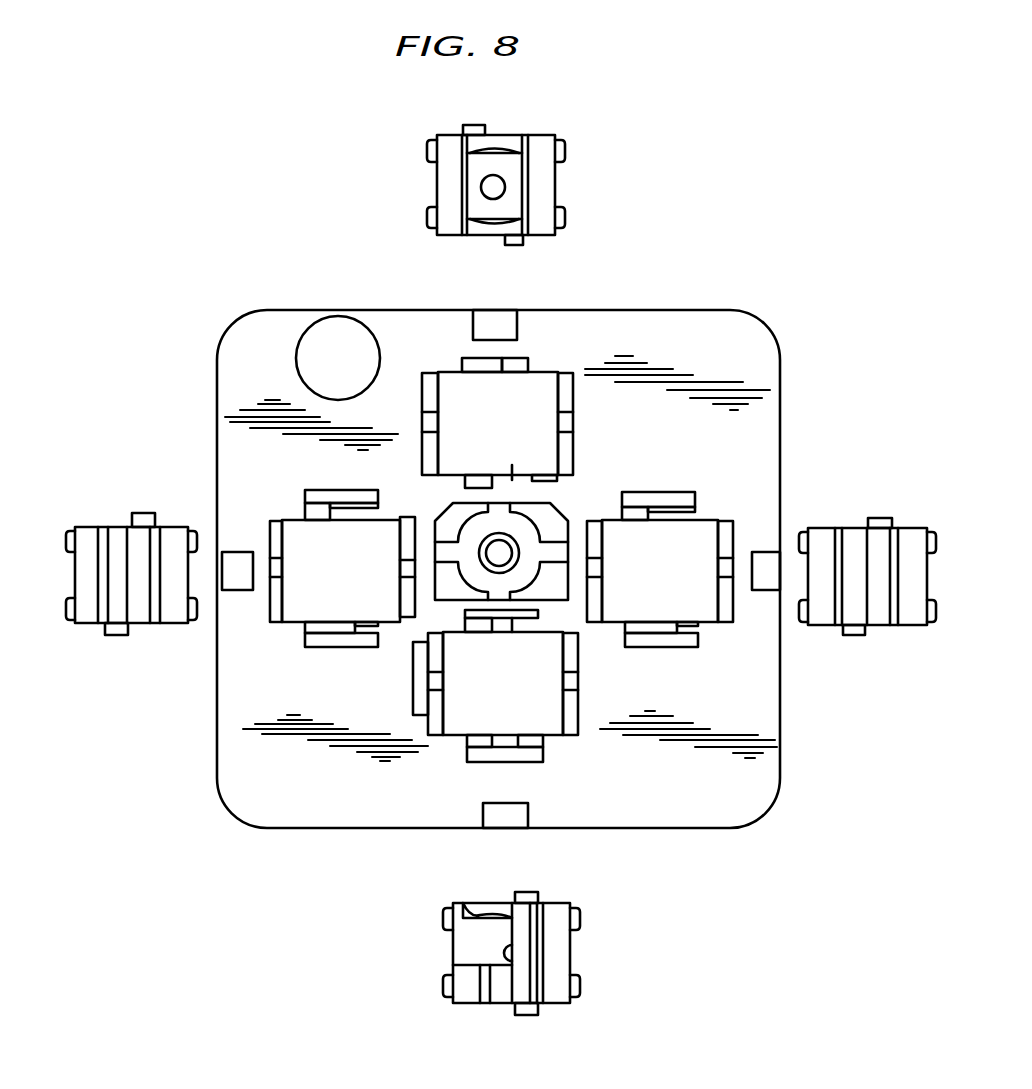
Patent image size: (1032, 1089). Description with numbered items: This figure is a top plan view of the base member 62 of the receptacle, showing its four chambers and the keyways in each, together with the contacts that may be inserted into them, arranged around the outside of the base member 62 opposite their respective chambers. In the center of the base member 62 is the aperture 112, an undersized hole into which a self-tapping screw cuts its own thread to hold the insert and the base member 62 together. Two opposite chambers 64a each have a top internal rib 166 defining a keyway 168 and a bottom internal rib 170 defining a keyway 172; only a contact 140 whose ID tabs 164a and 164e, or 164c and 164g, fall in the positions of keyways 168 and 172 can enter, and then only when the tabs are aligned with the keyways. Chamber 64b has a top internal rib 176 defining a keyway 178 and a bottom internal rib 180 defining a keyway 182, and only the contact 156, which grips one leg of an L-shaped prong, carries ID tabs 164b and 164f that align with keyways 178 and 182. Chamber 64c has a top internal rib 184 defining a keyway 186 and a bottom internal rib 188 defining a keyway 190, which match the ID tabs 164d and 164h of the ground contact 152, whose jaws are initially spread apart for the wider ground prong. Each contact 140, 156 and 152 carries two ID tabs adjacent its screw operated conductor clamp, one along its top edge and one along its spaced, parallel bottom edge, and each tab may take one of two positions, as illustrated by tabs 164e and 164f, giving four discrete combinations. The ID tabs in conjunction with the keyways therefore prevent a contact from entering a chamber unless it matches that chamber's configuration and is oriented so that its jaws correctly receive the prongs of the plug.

The base member 62 is at (723, 829).
The chamber 64a is at (712, 532).
The chamber 64b is at (468, 723).
The chamber 64c is at (543, 386).
The aperture 112 is at (507, 548).
The contact 140 is at (179, 510).
The contact 152 is at (578, 178).
The contact 156 is at (455, 891).
The ID tab 164a is at (880, 517).
The ID tab 164b is at (522, 892).
The ID tab 164c is at (143, 512).
The ID tab 164d is at (476, 124).
The ID tab 164e is at (858, 637).
The ID tab 164f is at (540, 1012).
The ID tab 164g is at (115, 637).
The ID tab 164h is at (505, 240).
The top internal rib 166 is at (300, 511).
The keyway 168 is at (357, 521).
The bottom internal rib 170 is at (376, 641).
The keyway 172 is at (316, 632).
The top internal rib 176 is at (486, 634).
The keyway 178 is at (513, 622).
The bottom internal rib 180 is at (464, 745).
The keyway 182 is at (515, 741).
The top internal rib 184 is at (527, 358).
The keyway 186 is at (472, 360).
The bottom internal rib 188 is at (488, 487).
The keyway 190 is at (513, 478).